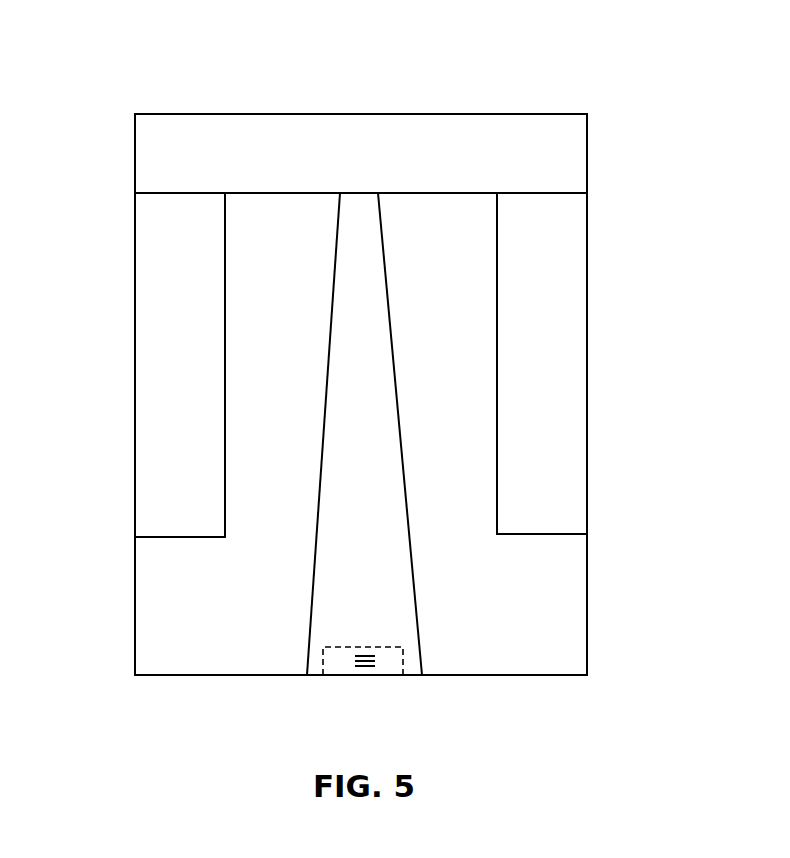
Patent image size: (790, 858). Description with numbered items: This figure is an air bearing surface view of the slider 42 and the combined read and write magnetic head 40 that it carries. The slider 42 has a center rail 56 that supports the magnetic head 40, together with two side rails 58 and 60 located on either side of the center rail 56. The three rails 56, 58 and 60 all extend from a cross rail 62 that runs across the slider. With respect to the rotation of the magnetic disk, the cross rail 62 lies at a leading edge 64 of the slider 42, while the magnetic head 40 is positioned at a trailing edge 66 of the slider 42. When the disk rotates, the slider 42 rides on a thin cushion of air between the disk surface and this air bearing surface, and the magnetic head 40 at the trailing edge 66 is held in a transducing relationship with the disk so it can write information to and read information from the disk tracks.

The slider 42 is at (137, 624).
The cross rail 62 is at (278, 128).
The leading edge 64 is at (461, 113).
The side rail 58 is at (152, 275).
The side rail 60 is at (570, 272).
The center rail 56 is at (346, 308).
The magnetic head 40 is at (344, 678).
The trailing edge 66 is at (487, 677).